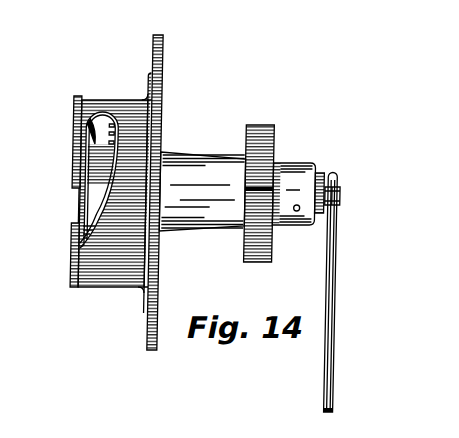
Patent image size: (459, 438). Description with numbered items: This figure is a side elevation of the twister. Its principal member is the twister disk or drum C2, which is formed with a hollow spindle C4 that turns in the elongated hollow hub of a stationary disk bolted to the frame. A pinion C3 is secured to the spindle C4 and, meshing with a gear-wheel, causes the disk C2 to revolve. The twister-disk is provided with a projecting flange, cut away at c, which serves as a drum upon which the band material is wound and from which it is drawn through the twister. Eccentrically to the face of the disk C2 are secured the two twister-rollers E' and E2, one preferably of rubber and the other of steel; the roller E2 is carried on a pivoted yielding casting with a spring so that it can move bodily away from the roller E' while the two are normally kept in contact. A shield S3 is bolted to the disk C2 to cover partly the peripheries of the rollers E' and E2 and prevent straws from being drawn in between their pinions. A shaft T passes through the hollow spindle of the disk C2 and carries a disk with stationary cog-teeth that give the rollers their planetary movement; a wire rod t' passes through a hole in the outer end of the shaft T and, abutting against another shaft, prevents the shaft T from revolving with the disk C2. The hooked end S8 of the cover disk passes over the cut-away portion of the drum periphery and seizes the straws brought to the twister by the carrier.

The cut-away portion of flange c is at (133, 180).
The twister-roller E' is at (77, 180).
The shield S3 is at (84, 137).
The hooked end S8 is at (78, 188).
The twister-roller E2 is at (82, 200).
The twister disk or drum C2 is at (147, 92).
The pinion C3 is at (261, 125).
The hollow spindle C4 is at (324, 173).
The wire rod t' is at (340, 293).
The shaft T is at (341, 195).